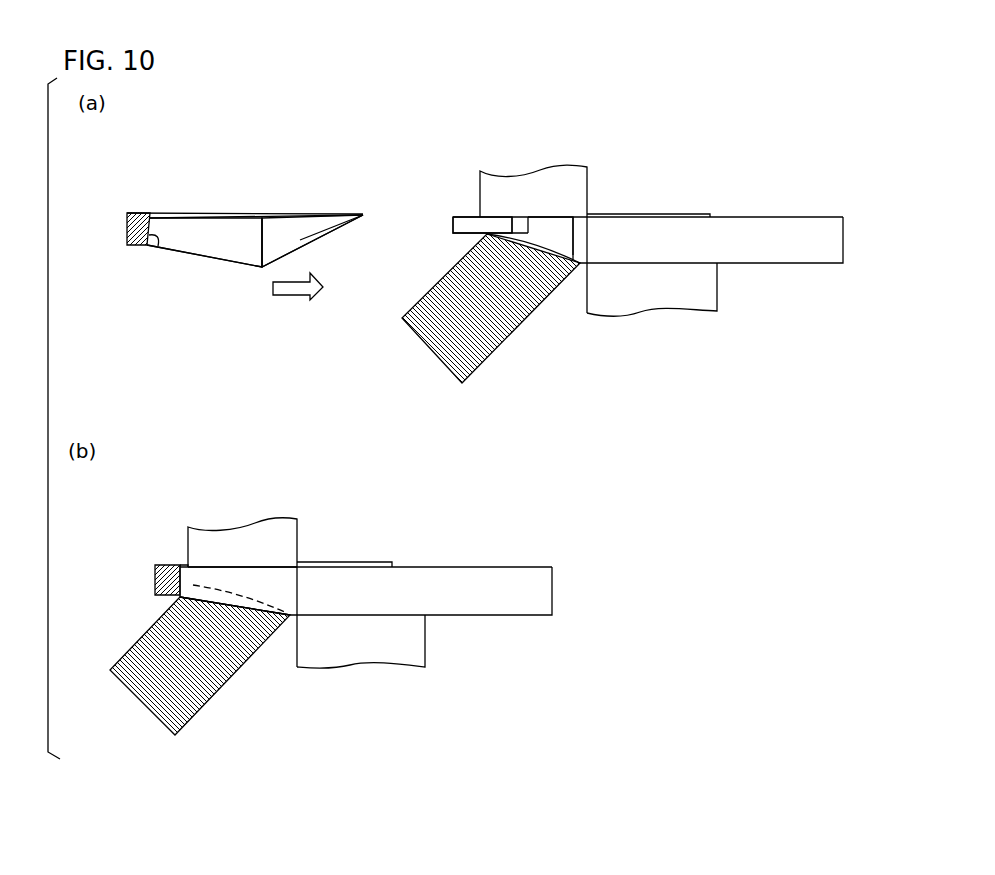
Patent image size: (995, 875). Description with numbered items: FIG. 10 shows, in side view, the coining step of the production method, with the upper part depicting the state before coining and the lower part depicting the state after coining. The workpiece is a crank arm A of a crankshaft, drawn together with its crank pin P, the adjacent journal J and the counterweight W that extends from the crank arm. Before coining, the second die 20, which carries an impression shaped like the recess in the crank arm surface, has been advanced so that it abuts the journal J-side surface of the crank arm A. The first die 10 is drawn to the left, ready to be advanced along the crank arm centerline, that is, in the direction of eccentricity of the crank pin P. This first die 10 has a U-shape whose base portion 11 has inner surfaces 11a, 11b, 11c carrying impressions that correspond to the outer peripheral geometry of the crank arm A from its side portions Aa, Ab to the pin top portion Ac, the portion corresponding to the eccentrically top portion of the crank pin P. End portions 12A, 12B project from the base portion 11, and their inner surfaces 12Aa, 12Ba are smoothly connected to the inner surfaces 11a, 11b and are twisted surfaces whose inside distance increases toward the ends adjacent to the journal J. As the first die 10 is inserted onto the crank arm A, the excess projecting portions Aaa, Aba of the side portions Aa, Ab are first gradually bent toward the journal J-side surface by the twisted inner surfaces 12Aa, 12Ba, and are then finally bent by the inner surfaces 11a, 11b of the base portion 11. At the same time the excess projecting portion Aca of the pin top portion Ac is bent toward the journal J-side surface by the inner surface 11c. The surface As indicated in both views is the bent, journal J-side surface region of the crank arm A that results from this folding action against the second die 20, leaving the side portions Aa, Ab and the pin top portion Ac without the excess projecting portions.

The first die 10 is at (134, 204).
The base portion 11 is at (203, 212).
The inner surface 11a is at (229, 214).
The inner surface 11b is at (237, 237).
The inner surface 11c is at (156, 245).
The end portion 12A is at (338, 197).
The end portion 12B is at (310, 212).
The inner surface 12Aa is at (382, 203).
The inner surface 12Ba is at (341, 242).
The second die 20 is at (510, 340).
The crank arm A is at (627, 218).
The side portion Aa is at (249, 529).
The side portion Ab is at (256, 582).
The pin top portion Ac is at (185, 560).
The excess projecting portion Aaa is at (576, 190).
The excess projecting portion Aba is at (547, 230).
The excess projecting portion Aca is at (460, 213).
The inclined surface As is at (553, 253).
The crank pin P is at (585, 185).
The counterweight W is at (813, 216).
The journal J is at (717, 300).